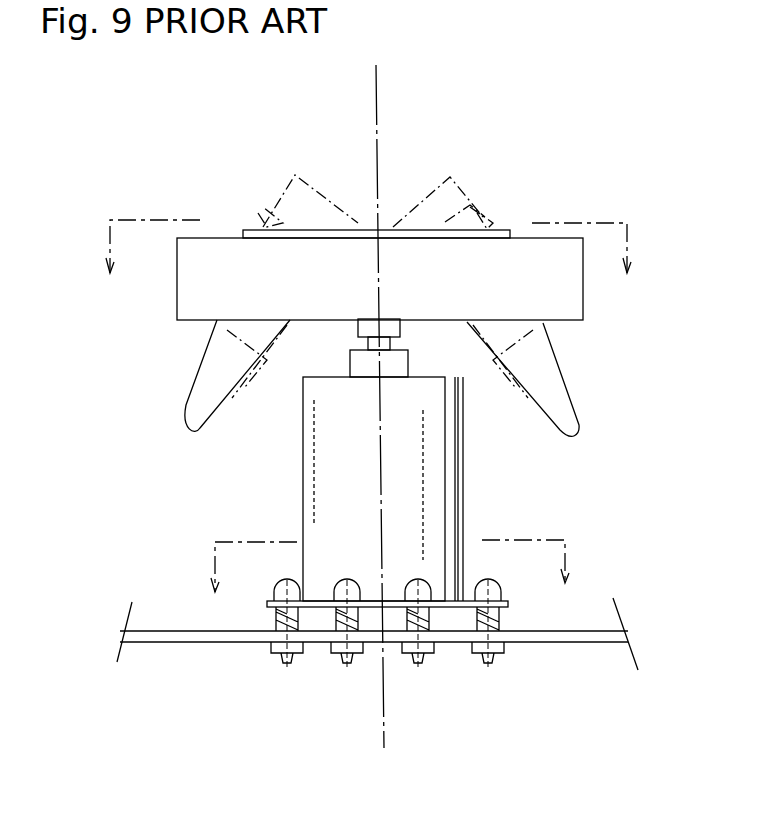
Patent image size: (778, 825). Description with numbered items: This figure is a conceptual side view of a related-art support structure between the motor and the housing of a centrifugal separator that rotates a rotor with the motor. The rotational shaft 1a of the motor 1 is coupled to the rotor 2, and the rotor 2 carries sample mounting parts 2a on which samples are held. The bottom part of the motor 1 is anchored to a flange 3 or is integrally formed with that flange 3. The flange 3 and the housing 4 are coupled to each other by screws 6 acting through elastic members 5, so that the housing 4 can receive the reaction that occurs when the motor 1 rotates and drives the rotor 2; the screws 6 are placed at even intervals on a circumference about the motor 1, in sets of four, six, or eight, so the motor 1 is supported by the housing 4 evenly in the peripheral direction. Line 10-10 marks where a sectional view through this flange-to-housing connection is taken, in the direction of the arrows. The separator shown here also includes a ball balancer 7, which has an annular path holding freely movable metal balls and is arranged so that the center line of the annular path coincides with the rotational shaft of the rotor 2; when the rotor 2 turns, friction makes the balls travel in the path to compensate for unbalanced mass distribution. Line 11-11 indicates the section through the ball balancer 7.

The motor 1 is at (338, 448).
The rotational shaft 1a is at (392, 344).
The rotor 2 is at (305, 270).
The sample mounting parts 2a is at (493, 217).
The flange 3 is at (467, 595).
The housing 4 is at (242, 640).
The elastic members 5 is at (410, 625).
The screws 6 is at (418, 588).
The ball balancer 7 is at (523, 252).
The line 10- 10 is at (391, 566).
The line 11- 11 is at (369, 246).